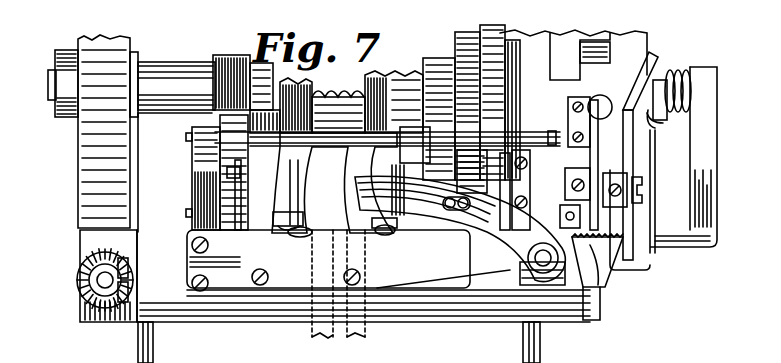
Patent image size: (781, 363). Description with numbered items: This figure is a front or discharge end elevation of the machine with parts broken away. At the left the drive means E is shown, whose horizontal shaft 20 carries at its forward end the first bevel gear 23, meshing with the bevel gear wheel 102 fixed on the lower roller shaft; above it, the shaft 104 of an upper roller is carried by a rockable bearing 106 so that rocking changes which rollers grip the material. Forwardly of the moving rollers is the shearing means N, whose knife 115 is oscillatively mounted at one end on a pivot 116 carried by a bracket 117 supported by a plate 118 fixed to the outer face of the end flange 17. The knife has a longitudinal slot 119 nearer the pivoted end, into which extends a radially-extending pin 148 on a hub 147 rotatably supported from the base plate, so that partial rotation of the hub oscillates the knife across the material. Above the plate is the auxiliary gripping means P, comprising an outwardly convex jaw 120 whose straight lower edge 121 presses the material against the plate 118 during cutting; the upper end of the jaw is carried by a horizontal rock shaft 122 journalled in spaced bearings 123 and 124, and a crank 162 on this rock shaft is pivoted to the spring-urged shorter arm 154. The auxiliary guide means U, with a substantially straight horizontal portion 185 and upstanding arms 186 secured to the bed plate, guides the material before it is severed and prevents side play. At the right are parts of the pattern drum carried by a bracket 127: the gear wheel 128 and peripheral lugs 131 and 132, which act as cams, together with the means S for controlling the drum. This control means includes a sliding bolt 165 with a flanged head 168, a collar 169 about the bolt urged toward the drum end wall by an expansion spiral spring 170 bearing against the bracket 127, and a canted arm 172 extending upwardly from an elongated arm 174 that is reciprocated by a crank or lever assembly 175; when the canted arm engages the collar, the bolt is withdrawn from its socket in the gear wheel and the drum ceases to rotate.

The auxiliary modified material gripping means P is at (290, 125).
The drive means E is at (70, 287).
The means to control the operation of the pattern drum S is at (667, 53).
The modified material shearing or severing means N is at (457, 237).
The auxiliary guide means U is at (360, 210).
The end flange 17 is at (172, 313).
The shaft 20 is at (96, 280).
The first bevel gear 23 is at (82, 300).
The bevel gear wheel 102 is at (186, 213).
The shaft 104 is at (227, 172).
The bearing 106 is at (237, 202).
The knife 115 is at (522, 239).
The pivot 116 is at (547, 263).
The bracket 117 is at (423, 277).
The plate 118 is at (230, 287).
The slot 119 is at (453, 213).
The jaw 120 is at (340, 167).
The lower edge 121 is at (272, 247).
The rock shaft 122 is at (186, 137).
The bearing 123 is at (413, 135).
The bearing 124 is at (200, 172).
The bracket 127 is at (703, 220).
The gear wheel 128 is at (463, 50).
The lug 131 is at (567, 50).
The lug 132 is at (597, 52).
The hub 147 is at (470, 206).
The pin 148 is at (447, 220).
The shorter arm 154 is at (597, 203).
The crank 162 is at (567, 123).
The sliding bolt 165 is at (643, 123).
The flanged head 168 is at (667, 120).
The collar 169 is at (673, 100).
The expansion spiral spring 170 is at (687, 77).
The canted arm 172 is at (633, 87).
The elongated arm 174 is at (643, 193).
The crank or lever assembly 175 is at (600, 277).
The horizontal portion 185 is at (330, 237).
The upstanding arms 186 is at (192, 235).